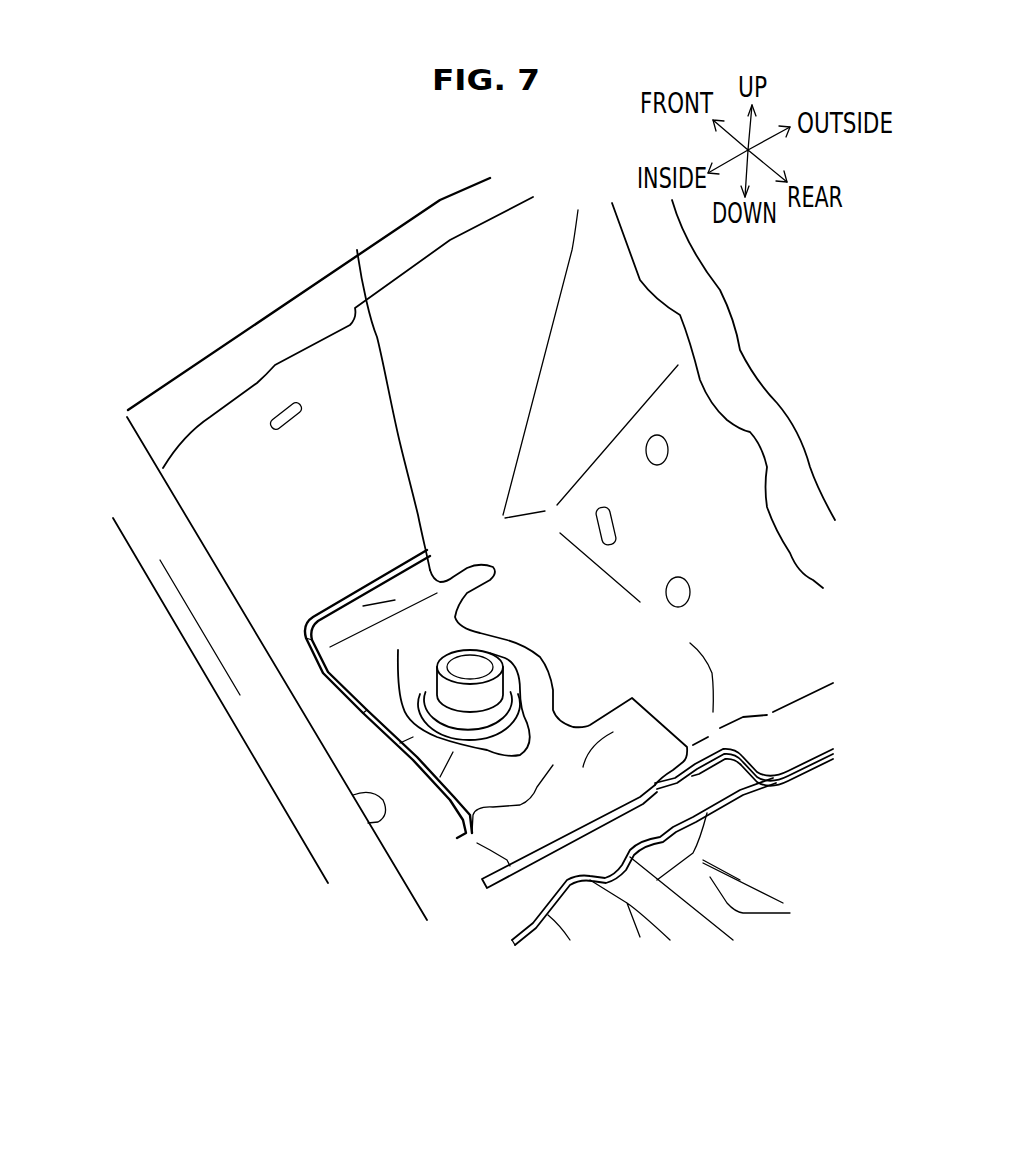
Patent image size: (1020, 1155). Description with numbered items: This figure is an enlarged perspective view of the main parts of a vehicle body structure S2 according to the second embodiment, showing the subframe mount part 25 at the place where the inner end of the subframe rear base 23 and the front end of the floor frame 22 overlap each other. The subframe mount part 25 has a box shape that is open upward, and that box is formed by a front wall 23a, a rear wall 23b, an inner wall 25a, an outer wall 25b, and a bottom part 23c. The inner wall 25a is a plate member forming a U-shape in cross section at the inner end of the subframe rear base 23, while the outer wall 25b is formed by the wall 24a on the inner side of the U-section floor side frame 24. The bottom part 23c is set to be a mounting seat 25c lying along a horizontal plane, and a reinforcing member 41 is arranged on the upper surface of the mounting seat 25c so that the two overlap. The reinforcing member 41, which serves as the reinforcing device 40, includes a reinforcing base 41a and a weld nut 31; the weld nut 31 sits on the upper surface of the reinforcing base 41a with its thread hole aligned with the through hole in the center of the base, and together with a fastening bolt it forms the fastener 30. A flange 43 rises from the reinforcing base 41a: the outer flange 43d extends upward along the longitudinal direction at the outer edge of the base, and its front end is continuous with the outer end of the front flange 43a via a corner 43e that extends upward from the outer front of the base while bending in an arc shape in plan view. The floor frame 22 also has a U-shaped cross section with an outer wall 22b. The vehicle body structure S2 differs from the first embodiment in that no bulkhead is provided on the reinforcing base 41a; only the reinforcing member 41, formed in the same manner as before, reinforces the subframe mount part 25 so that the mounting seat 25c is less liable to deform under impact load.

The vehicle body structure S2 is at (483, 187).
The subframe mount part 25 is at (293, 243).
The inner wall 25a is at (722, 480).
The outer wall 25b is at (223, 582).
The mounting seat 25c is at (443, 868).
The subframe rear base 23 is at (477, 629).
The front wall 23a is at (303, 457).
The rear wall 23b is at (587, 827).
The bottom part 23c is at (278, 721).
The floor side frame 24 is at (156, 644).
The wall on an inner side 24a is at (156, 644).
The floor frame 22 is at (650, 942).
The outer wall 22b is at (643, 927).
The fastener 30 is at (650, 687).
The weld nut 31 is at (490, 692).
The reinforcing device 40 is at (475, 726).
The reinforcing member 41 is at (475, 726).
The reinforcing base 41a is at (490, 780).
The flange 43 is at (296, 655).
The front flange 43a is at (363, 605).
The outer flange 43d is at (367, 743).
The corner 43e is at (313, 643).